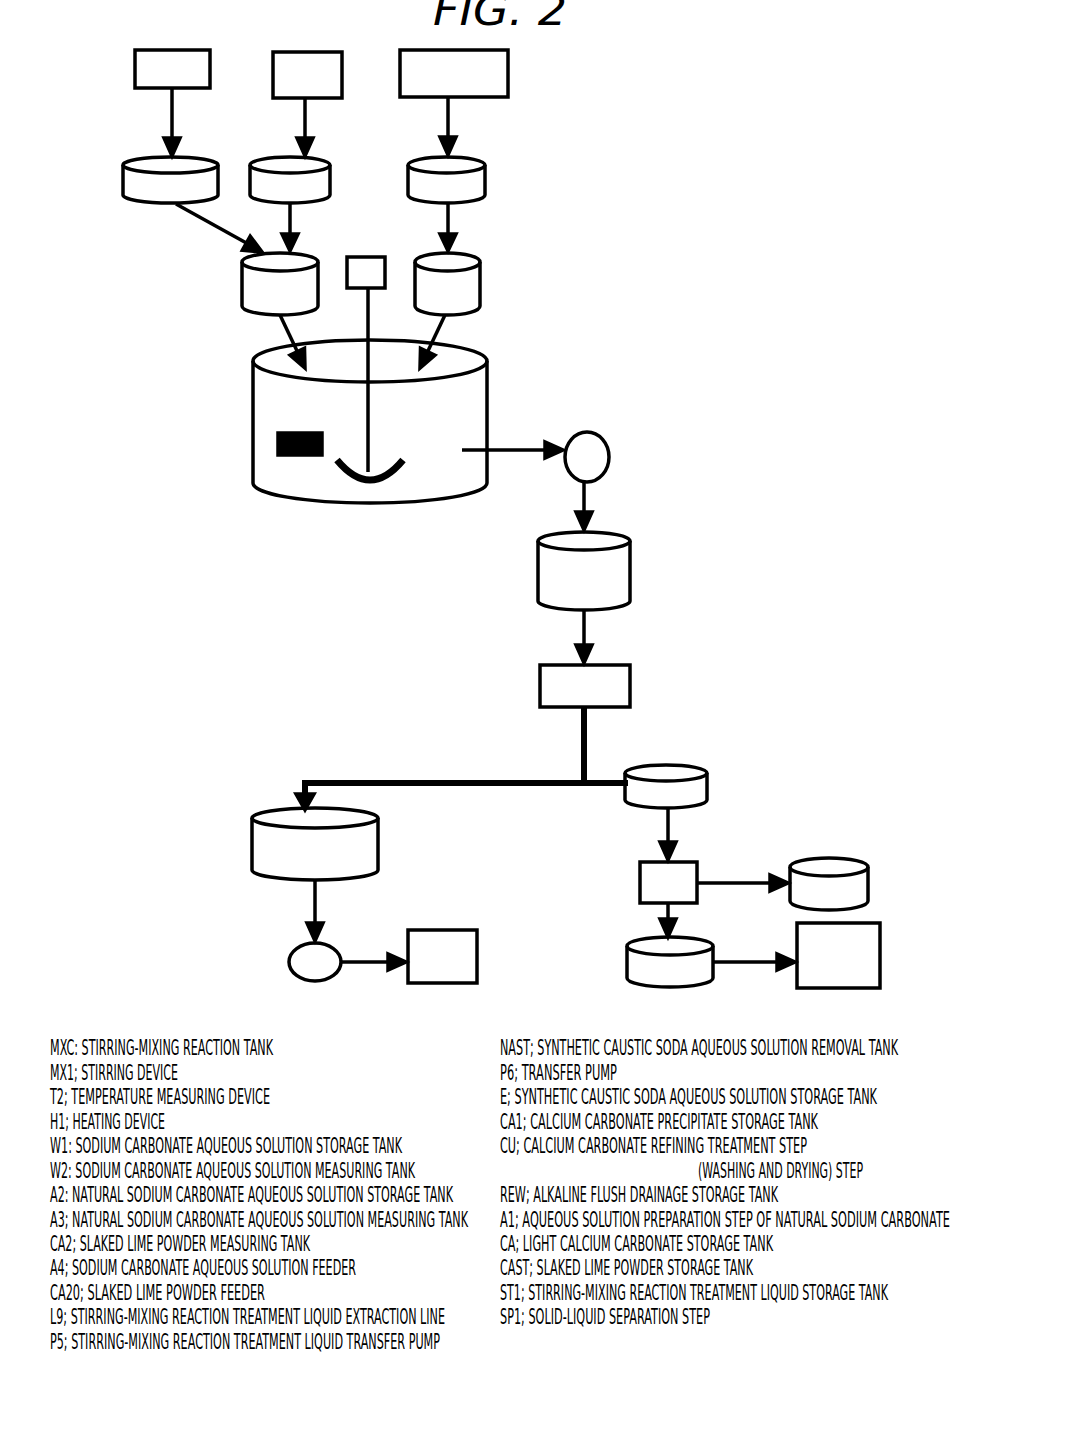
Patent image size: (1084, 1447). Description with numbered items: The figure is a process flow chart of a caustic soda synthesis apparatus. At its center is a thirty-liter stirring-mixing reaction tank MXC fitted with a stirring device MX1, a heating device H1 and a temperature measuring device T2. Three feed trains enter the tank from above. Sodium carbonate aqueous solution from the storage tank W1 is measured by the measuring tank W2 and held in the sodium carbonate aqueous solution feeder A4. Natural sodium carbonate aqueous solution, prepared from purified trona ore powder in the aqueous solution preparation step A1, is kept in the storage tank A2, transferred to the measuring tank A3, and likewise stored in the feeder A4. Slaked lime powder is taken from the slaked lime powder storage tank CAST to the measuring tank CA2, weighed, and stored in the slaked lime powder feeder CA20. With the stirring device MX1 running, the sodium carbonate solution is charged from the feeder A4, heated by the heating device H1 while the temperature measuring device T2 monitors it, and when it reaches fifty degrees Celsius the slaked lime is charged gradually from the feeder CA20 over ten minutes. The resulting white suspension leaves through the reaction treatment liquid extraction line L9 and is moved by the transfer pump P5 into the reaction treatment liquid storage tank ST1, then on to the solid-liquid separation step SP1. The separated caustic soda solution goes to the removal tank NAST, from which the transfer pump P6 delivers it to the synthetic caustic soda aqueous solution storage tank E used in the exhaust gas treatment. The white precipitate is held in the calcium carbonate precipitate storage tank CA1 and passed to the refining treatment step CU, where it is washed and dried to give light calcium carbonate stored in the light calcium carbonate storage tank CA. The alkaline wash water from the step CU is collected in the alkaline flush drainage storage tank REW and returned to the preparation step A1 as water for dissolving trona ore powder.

The stirring-mixing reaction tank MXC is at (329, 421).
The stirring device MX1 is at (370, 355).
The temperature measuring device T2 is at (458, 430).
The heating device H1 is at (280, 449).
The sodium carbonate aqueous solution storage tank W1 is at (172, 103).
The sodium carbonate aqueous solution measuring tank W2 is at (180, 191).
The natural sodium carbonate aqueous solution storage tank A2 is at (307, 104).
The natural sodium carbonate aqueous solution measuring tank A3 is at (290, 190).
The slaked lime powder measuring tank CA2 is at (431, 190).
The sodium carbonate aqueous solution feeder A4 is at (256, 310).
The slaked lime powder feeder CA20 is at (485, 310).
The stirring-mixing reaction treatment liquid extraction line L9 is at (512, 469).
The stirring-mixing reaction treatment liquid transfer pump P5 is at (606, 481).
The synthetic caustic soda aqueous solution removal tank NAST is at (352, 874).
The transfer pump P6 is at (331, 974).
The synthetic caustic soda aqueous solution storage tank E is at (442, 956).
The calcium carbonate precipitate storage tank CA1 is at (697, 812).
The calcium carbonate refining treatment step CU is at (688, 899).
The alkaline flush drainage storage tank REW is at (674, 962).
The aqueous solution preparation step of natural sodium carbonate A1 is at (838, 955).
The light calcium carbonate storage tank CA is at (854, 884).
The slaked lime powder storage tank CAST is at (454, 102).
The stirring-mixing reaction treatment liquid storage tank ST1 is at (618, 597).
The solid-liquid separation step SP1 is at (497, 737).